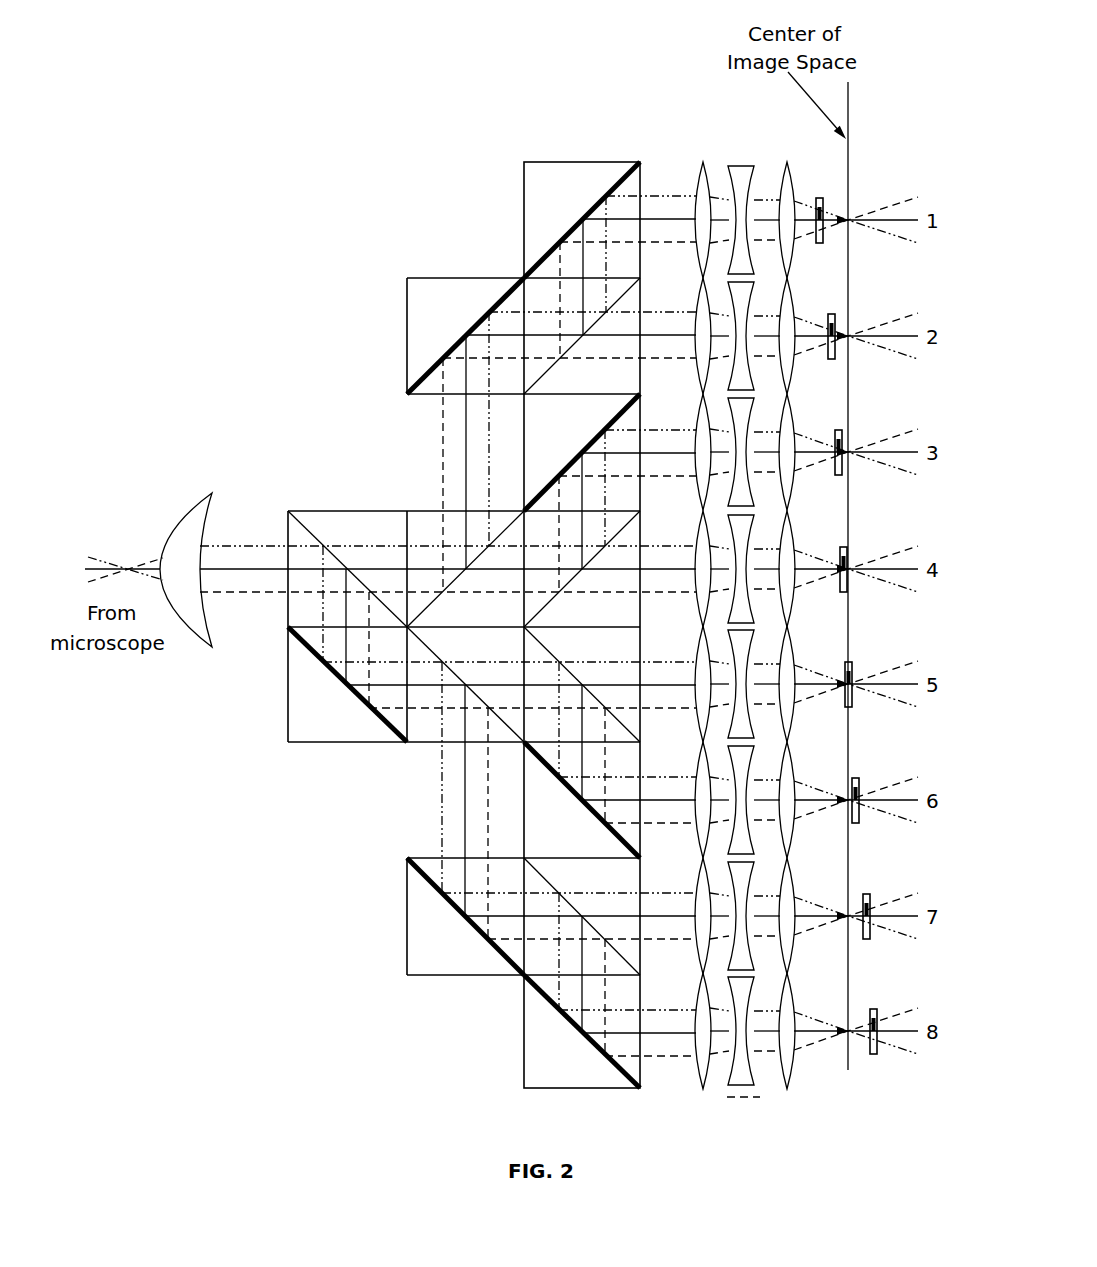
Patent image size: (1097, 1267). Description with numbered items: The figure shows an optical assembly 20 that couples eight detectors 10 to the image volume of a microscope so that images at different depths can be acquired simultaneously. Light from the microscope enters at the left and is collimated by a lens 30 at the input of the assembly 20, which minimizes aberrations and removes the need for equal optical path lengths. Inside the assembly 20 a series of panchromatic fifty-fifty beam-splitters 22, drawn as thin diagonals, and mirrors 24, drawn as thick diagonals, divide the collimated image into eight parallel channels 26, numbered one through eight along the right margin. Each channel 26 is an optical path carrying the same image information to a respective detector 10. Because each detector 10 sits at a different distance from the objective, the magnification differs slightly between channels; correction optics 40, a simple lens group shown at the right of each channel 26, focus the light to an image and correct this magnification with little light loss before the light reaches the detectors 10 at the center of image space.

The detector 10 is at (819, 197).
The optical assembly 20 is at (576, 140).
The beam-splitter 22 is at (318, 528).
The mirror 24 is at (570, 230).
The channel 26 is at (660, 218).
The lens 30 is at (166, 538).
The correction optics 40 is at (768, 150).